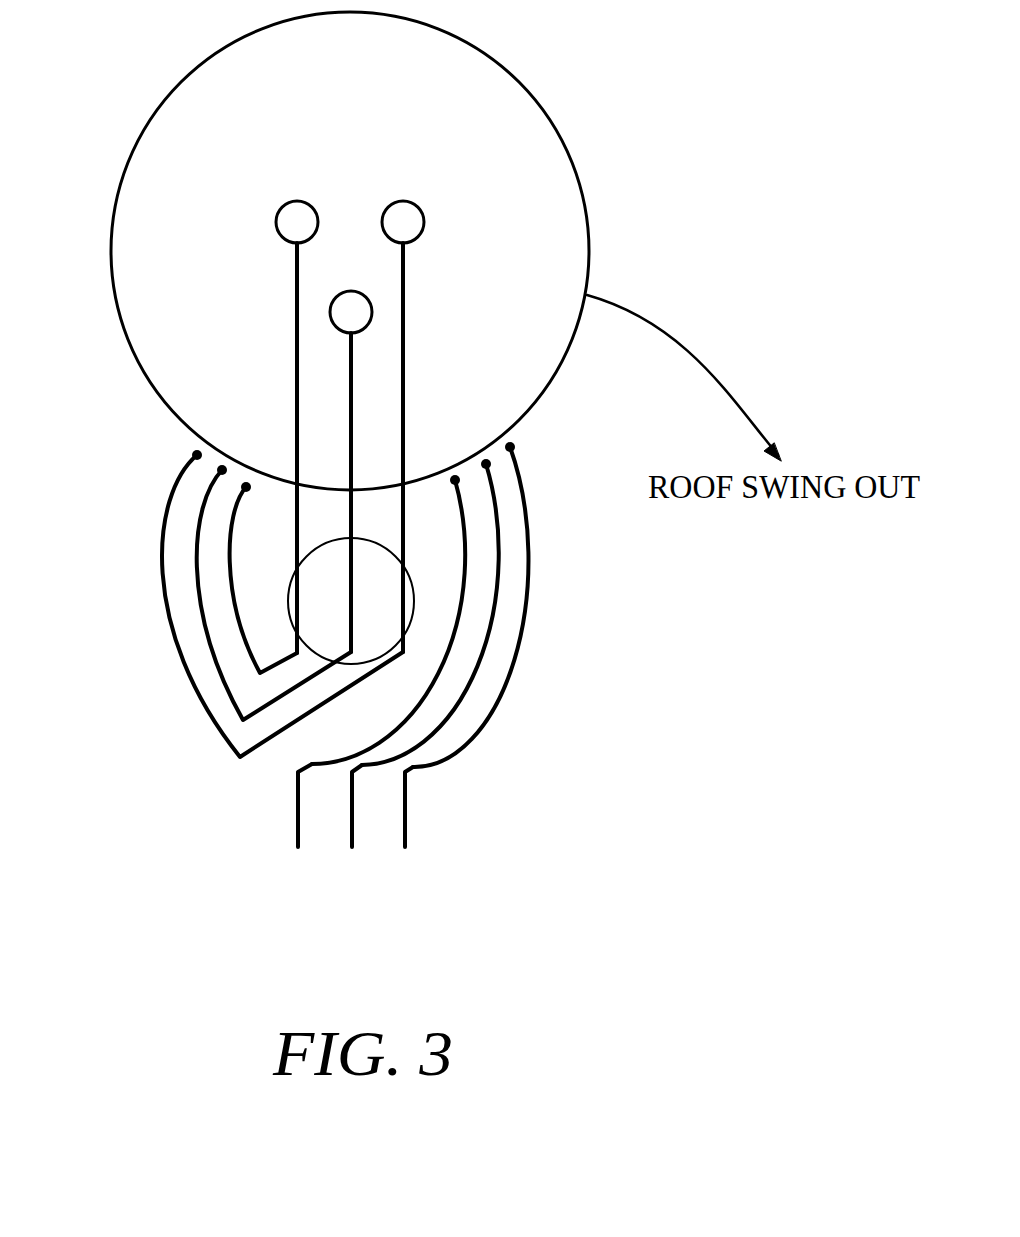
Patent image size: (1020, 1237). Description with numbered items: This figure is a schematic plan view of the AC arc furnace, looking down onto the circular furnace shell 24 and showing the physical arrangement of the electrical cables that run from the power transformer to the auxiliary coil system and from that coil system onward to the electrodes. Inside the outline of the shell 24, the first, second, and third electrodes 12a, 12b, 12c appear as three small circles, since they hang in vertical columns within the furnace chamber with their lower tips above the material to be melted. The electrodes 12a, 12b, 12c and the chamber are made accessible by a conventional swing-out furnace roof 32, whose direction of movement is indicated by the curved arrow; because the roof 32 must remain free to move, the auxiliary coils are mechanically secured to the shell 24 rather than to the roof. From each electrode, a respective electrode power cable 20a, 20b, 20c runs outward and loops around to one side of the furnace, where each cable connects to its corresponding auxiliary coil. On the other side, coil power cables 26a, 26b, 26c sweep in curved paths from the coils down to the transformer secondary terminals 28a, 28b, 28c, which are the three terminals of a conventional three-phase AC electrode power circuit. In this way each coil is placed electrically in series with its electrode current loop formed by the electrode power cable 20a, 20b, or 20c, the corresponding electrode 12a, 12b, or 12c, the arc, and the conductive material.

The furnace shell 24 is at (549, 115).
The swing-out furnace roof 32 is at (528, 319).
The first electrode 12a is at (348, 291).
The second electrode 12b is at (420, 203).
The third electrode 12c is at (297, 200).
The electrode power cable 20a is at (202, 612).
The electrode power cable 20b is at (167, 518).
The electrode power cable 20c is at (233, 538).
The coil power cable 26a is at (443, 705).
The coil power cable 26b is at (320, 762).
The coil power cable 26c is at (521, 567).
The transformer secondary terminal 28a is at (352, 840).
The transformer secondary terminal 28b is at (295, 828).
The transformer secondary terminal 28c is at (407, 837).